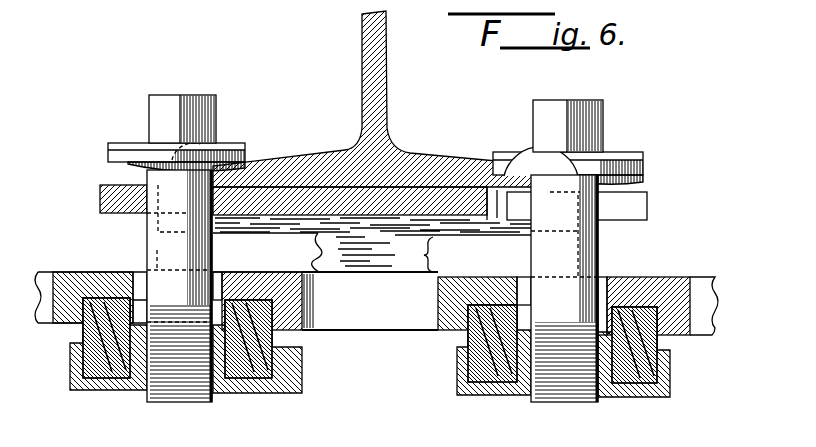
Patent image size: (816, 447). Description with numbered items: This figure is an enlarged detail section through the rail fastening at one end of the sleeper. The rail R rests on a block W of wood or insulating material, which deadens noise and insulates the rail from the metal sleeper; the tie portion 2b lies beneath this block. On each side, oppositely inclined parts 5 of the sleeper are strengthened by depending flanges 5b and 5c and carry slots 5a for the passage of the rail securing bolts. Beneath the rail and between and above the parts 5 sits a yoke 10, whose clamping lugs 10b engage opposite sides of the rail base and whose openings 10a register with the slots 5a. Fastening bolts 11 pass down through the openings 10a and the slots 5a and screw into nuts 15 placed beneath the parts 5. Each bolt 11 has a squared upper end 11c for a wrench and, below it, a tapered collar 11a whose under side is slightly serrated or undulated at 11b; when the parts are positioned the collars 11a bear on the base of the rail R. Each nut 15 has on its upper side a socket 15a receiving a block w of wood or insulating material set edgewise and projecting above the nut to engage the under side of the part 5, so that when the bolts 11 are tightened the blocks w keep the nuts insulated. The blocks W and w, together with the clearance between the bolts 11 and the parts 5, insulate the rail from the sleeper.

The rail R is at (386, 112).
The tie 2b is at (298, 245).
The block of wood or insulating material W is at (416, 254).
The inclined part 5 is at (105, 282).
The slot 5a is at (213, 275).
The depending flange 5b is at (290, 330).
The depending flange 5c is at (63, 326).
The yoke 10 is at (118, 200).
The opening 10a is at (150, 213).
The clamping lug 10b is at (193, 148).
The fastening bolt 11 is at (165, 249).
The collar 11a is at (130, 143).
The serrated under side 11b is at (130, 168).
The squared upper end 11c is at (195, 97).
The nut 15 is at (221, 392).
The socket 15a is at (80, 376).
The block of wood or insulating material w is at (112, 355).